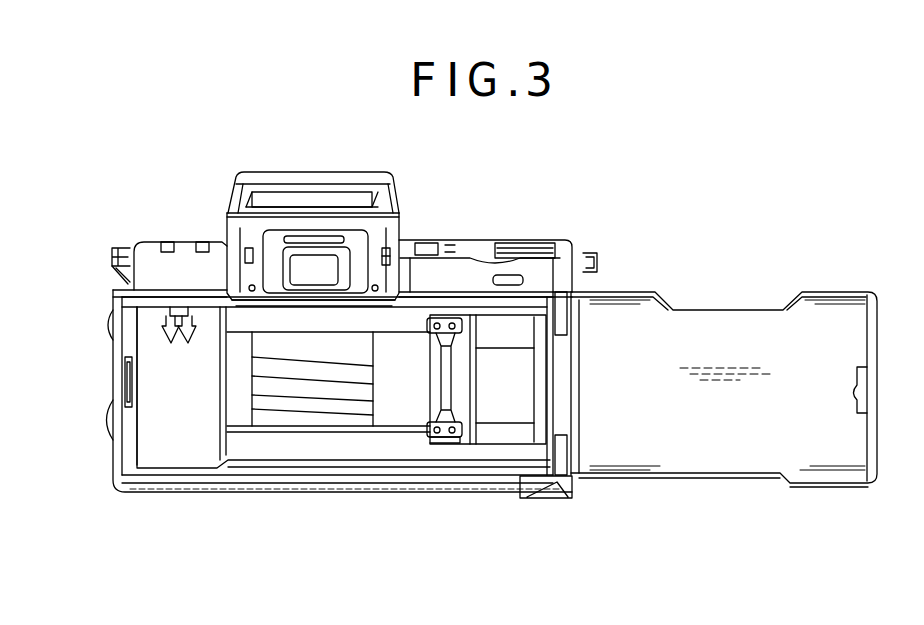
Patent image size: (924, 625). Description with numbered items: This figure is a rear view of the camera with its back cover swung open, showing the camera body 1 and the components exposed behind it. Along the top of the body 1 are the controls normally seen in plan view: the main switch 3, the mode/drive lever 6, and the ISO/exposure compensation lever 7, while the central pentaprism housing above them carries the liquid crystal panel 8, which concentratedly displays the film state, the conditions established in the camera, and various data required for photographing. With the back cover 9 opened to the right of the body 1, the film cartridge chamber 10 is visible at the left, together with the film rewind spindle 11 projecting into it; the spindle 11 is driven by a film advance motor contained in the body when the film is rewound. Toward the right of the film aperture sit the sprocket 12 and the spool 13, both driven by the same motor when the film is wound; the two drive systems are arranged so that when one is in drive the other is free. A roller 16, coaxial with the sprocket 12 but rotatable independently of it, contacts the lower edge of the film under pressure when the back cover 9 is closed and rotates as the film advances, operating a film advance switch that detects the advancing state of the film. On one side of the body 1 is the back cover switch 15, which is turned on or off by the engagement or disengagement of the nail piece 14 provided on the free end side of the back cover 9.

The camera body 1 is at (495, 242).
The main switch 3 is at (428, 243).
The mode/drive lever 6 is at (201, 241).
The ISO/exposure compensation lever 7 is at (167, 241).
The liquid crystal panel 8 is at (355, 193).
The back cover 9 is at (720, 326).
The film cartridge chamber 10 is at (148, 440).
The film rewind spindle 11 is at (176, 308).
The sprocket 12 is at (433, 381).
The spool 13 is at (513, 435).
The nail piece 14 is at (858, 400).
The back cover switch 15 is at (127, 390).
The roller 16 is at (458, 437).